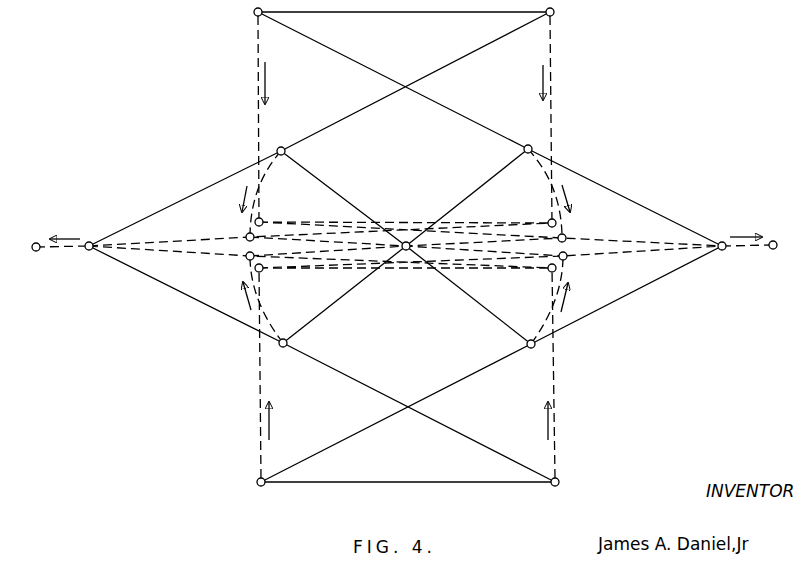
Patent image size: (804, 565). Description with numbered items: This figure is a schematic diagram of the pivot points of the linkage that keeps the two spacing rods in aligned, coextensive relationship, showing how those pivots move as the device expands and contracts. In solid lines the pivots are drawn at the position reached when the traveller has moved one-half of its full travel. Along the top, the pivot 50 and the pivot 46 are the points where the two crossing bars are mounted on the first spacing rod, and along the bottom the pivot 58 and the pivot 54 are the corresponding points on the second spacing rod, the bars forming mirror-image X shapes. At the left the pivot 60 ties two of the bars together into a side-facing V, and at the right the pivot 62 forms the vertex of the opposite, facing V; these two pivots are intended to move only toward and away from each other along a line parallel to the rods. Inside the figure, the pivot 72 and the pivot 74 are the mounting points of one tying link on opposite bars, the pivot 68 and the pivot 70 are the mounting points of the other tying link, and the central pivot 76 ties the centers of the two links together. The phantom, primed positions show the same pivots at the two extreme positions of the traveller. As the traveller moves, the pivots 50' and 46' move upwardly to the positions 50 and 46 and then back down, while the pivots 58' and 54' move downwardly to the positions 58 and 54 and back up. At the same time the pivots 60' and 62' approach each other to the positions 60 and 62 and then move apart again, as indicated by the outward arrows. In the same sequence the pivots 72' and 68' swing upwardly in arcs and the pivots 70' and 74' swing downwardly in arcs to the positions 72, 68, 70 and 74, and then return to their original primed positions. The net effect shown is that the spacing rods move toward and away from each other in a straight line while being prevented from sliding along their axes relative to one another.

The pivot 50 is at (242, 8).
The pivot 46 is at (568, 8).
The pivot 72 is at (283, 135).
The pivot 68 is at (528, 134).
The pivot 60 is at (96, 228).
The extreme position of pivot 60 60' is at (33, 228).
The pivot 76 is at (411, 246).
The pivot 62 is at (732, 228).
The extreme position of pivot 62 62' is at (781, 263).
The pivot 70 is at (286, 363).
The pivot 74 is at (528, 363).
The pivot 58 is at (248, 498).
The pivot 54 is at (566, 498).
The extreme position of pivot 50 50' is at (276, 210).
The extreme position of pivot 46 46' is at (533, 209).
The extreme position of pivot 72 72' is at (229, 227).
The extreme position of pivot 68 68' is at (583, 228).
The extreme position of pivot 70 70' is at (229, 269).
The extreme position of pivot 74 74' is at (586, 269).
The extreme position of pivot 58 58' is at (278, 284).
The extreme position of pivot 54 54' is at (534, 284).